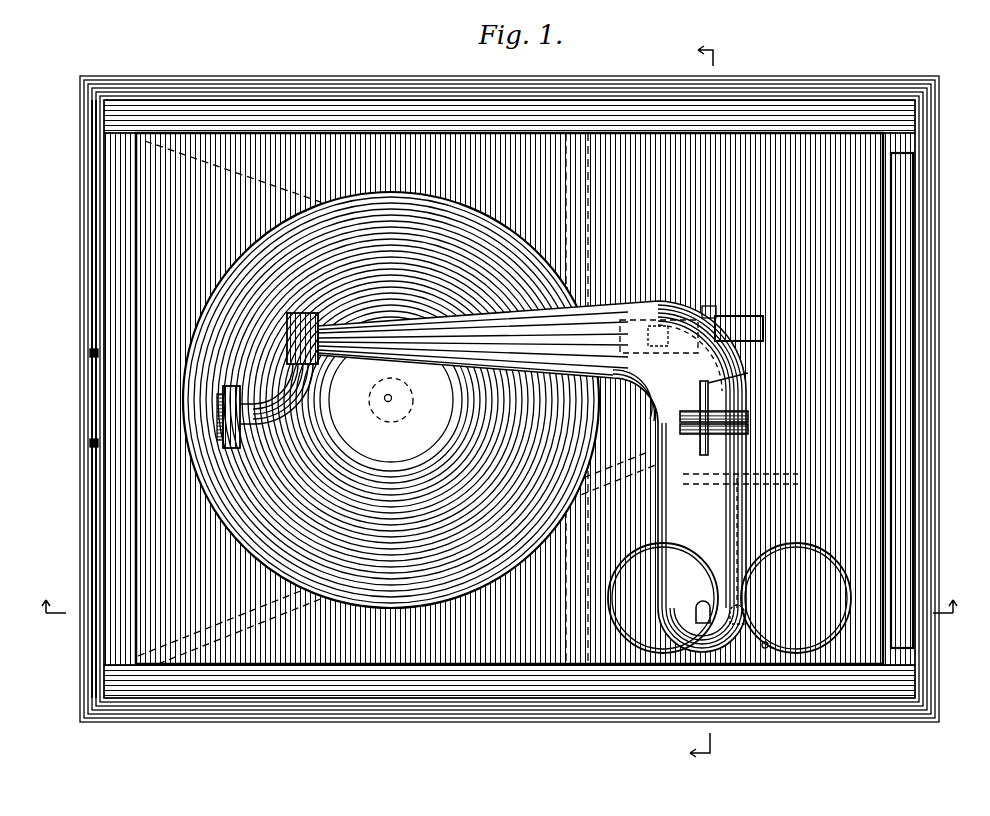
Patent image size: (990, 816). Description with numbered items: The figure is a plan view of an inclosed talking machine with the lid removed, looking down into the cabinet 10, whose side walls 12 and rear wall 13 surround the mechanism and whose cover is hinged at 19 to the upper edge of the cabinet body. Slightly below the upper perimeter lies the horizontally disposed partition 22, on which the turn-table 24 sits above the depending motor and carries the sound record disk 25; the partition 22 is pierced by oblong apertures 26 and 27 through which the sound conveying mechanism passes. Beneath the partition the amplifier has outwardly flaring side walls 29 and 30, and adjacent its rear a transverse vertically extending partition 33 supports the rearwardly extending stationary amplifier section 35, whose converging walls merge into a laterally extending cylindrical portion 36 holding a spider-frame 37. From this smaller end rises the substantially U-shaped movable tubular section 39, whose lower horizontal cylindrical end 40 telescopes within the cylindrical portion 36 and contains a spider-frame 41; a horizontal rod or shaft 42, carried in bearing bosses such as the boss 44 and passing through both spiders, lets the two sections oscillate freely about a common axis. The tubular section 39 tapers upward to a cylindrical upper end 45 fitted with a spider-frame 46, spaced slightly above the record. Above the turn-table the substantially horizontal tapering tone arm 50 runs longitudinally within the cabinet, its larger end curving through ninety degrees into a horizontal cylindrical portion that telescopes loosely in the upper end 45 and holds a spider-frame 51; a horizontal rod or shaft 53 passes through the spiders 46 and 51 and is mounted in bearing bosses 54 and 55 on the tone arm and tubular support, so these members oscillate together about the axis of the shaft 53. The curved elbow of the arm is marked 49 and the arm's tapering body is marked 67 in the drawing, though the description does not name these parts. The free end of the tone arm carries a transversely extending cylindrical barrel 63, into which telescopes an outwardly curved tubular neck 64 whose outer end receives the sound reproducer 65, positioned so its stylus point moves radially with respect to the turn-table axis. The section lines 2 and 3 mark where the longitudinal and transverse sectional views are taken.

The cabinet 10 is at (283, 68).
The side walls 12 is at (403, 92).
The rear wall 13 is at (893, 488).
The hinge 19 is at (115, 264).
The partition 22 is at (509, 398).
The turn-table 24 is at (228, 540).
The sound record disk 25 is at (485, 215).
The oblong aperture 26 is at (838, 578).
The oblong aperture 27 is at (756, 318).
The side wall of amplifier 29 is at (300, 194).
The side wall of amplifier 30 is at (275, 594).
The vertically extending partition 33 is at (578, 202).
The stationary amplifier section 35 is at (627, 490).
The cylindrical portion 36 is at (790, 470).
The spider-frame 37 is at (800, 440).
The movable tubular section 39 is at (716, 614).
The lower horizontal cylindrical end 40 is at (805, 522).
The spider-frame 41 is at (820, 546).
The horizontal rod or shaft 42 is at (700, 630).
The bearing boss 44 is at (757, 642).
The cylindrical upper end 45 is at (666, 396).
The spider-frame 46 is at (690, 425).
The elbow 49 is at (700, 345).
The tone arm 50 is at (648, 336).
The spider-frame 51 is at (742, 400).
The horizontal rod or shaft 53 is at (740, 365).
The bearing boss 54 is at (660, 612).
The bearing boss 55 is at (713, 297).
The cylindrical barrel 63 is at (285, 330).
The tubular neck 64 is at (290, 408).
The sound reproducer 65 is at (212, 436).
The tone arm 67 is at (655, 300).
The section line 2— 2 is at (501, 621).
The section line 3— 3 is at (713, 407).